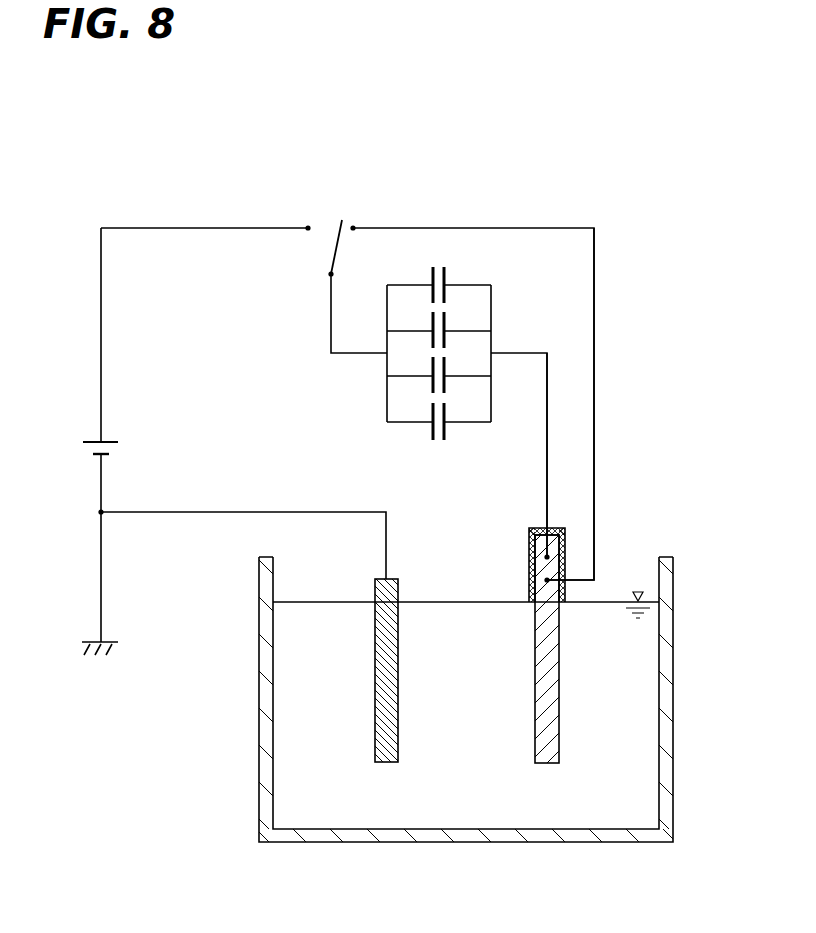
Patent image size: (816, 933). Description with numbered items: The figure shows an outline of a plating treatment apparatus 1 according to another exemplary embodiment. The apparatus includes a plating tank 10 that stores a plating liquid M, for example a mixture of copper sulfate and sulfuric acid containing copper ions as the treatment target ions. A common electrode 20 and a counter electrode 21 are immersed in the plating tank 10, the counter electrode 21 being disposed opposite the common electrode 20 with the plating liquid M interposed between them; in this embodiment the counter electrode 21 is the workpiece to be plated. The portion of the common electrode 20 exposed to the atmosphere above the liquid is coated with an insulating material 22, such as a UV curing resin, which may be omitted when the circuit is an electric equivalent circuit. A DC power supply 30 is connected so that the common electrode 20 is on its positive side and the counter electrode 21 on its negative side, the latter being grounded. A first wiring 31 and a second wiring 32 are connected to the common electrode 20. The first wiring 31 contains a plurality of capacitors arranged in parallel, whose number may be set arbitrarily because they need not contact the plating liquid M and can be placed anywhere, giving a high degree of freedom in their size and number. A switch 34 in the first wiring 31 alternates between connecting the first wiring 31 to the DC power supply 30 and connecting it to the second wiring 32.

The plating treatment apparatus 1 is at (413, 198).
The plating tank 10 is at (667, 725).
The common electrode 20 is at (553, 725).
The counter electrode 21 is at (398, 720).
The insulating material 22 is at (535, 560).
The DC power supply 30 is at (92, 442).
The first wiring 31 is at (547, 487).
The second wiring 32 is at (594, 430).
The switch 34 is at (334, 258).
The plating liquid M is at (648, 638).